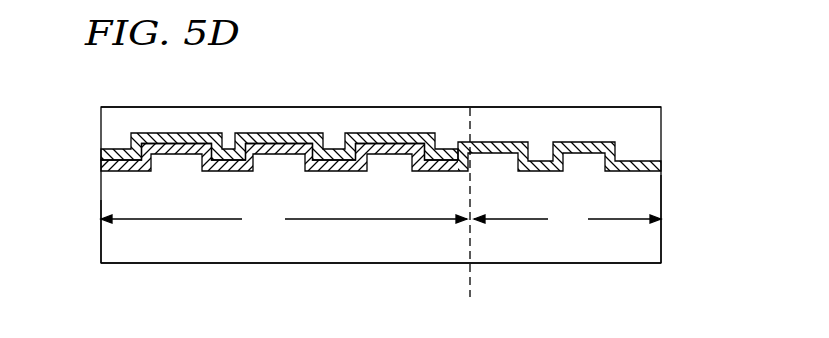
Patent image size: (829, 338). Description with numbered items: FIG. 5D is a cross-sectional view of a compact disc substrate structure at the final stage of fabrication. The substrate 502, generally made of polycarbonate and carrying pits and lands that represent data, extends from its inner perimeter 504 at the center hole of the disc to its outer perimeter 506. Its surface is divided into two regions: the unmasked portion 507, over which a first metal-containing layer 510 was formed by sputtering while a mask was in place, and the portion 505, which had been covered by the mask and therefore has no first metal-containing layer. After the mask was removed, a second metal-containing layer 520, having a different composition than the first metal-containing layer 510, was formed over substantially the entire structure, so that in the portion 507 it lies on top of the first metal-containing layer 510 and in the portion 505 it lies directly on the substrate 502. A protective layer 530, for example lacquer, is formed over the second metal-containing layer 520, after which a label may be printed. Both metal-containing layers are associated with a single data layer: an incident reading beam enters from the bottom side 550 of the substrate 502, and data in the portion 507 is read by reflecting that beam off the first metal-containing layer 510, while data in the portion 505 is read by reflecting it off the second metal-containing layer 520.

The substrate 502 is at (652, 247).
The inner perimeter 504 is at (101, 238).
The portion 505 is at (567, 218).
The outer perimeter 506 is at (661, 193).
The unmasked portion 507 is at (284, 218).
The first metal-containing layer 510 is at (108, 171).
The second metal-containing layer 520 is at (617, 150).
The protective layer 530 is at (386, 118).
The bottom side 550 is at (337, 264).